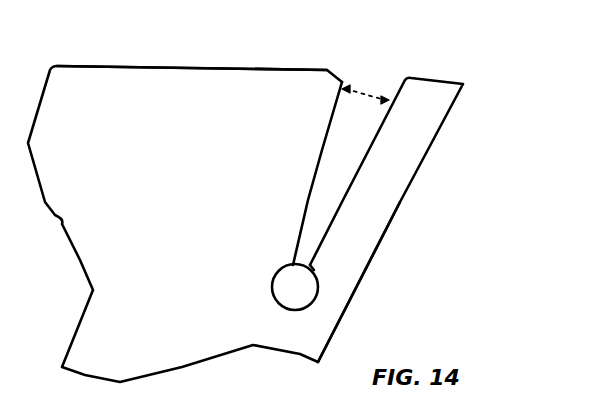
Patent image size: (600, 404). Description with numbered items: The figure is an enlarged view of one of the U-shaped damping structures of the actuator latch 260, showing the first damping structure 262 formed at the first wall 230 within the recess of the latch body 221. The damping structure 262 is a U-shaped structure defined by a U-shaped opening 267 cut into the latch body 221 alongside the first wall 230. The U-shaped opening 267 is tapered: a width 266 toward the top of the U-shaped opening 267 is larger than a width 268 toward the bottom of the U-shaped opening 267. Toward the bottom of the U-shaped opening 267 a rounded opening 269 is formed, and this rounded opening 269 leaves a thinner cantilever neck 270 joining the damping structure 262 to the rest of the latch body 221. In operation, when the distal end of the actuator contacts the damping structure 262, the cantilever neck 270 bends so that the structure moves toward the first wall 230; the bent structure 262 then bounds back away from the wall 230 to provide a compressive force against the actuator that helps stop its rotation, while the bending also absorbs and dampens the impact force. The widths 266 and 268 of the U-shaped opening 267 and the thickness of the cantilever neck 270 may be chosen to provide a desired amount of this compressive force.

The latch body 221 is at (106, 262).
The first wall 230 is at (317, 168).
The actuator latch 260 is at (177, 66).
The first damping structure 262 is at (436, 140).
The width toward the top of the U-shaped opening 266 is at (367, 100).
The U-shaped opening 267 is at (418, 57).
The width toward the bottom of the U-shaped opening 268 is at (337, 263).
The rounded opening 269 is at (296, 287).
The cantilever neck 270 is at (325, 302).